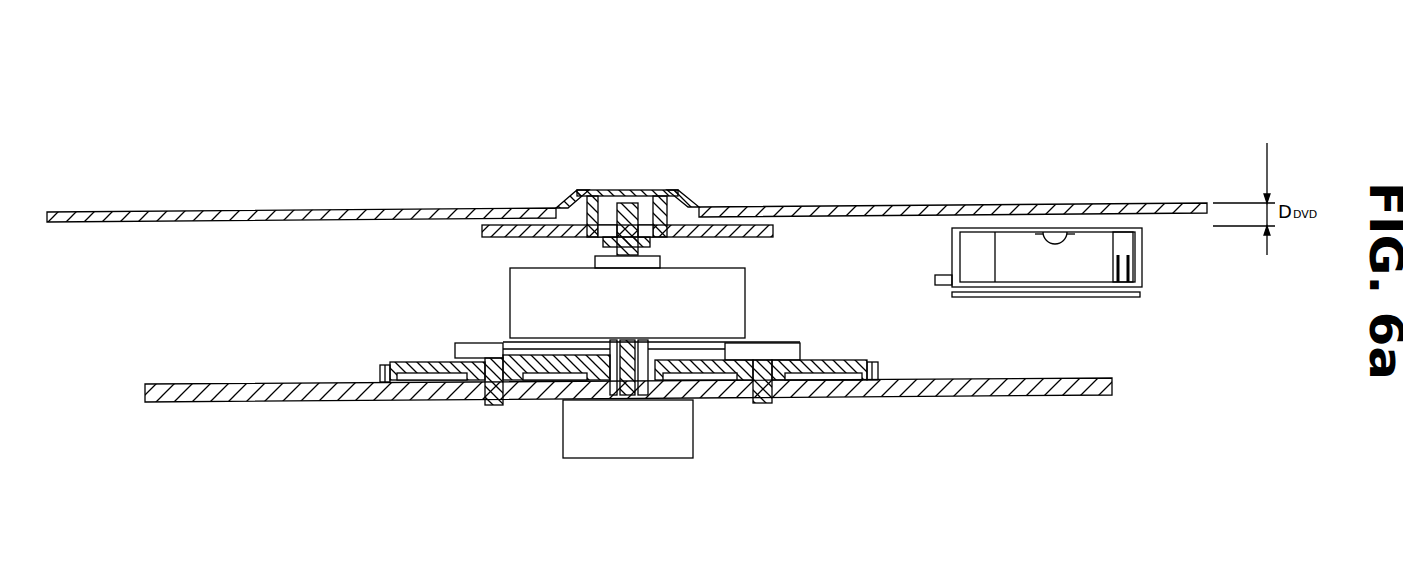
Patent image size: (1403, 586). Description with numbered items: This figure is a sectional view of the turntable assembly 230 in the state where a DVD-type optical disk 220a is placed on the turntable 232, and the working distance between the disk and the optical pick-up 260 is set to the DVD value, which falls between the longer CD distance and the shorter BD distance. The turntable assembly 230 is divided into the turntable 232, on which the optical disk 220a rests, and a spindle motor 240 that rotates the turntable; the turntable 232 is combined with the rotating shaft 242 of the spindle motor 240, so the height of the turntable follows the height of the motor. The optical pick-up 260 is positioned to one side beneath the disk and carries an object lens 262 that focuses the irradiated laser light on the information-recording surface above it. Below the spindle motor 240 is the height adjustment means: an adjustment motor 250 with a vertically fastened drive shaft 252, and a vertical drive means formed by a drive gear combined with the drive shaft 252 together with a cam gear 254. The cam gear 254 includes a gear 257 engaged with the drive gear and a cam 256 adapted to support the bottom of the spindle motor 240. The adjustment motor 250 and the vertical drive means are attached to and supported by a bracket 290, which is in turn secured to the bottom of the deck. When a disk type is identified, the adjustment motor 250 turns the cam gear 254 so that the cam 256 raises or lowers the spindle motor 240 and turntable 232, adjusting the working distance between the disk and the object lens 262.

The optical disk 220a is at (887, 203).
The turntable assembly 230 is at (1005, 78).
The turntable 232 is at (668, 192).
The rotating shaft 242 is at (628, 203).
The spindle motor 240 is at (510, 298).
The adjustment motor 250 is at (687, 427).
The drive shaft 252 is at (625, 398).
The cam gear 254 is at (385, 373).
The cam 256 is at (485, 362).
The gear 257 is at (725, 343).
The optical pick-up 260 is at (1091, 205).
The object lens 262 is at (1055, 232).
The bracket 290 is at (1118, 383).